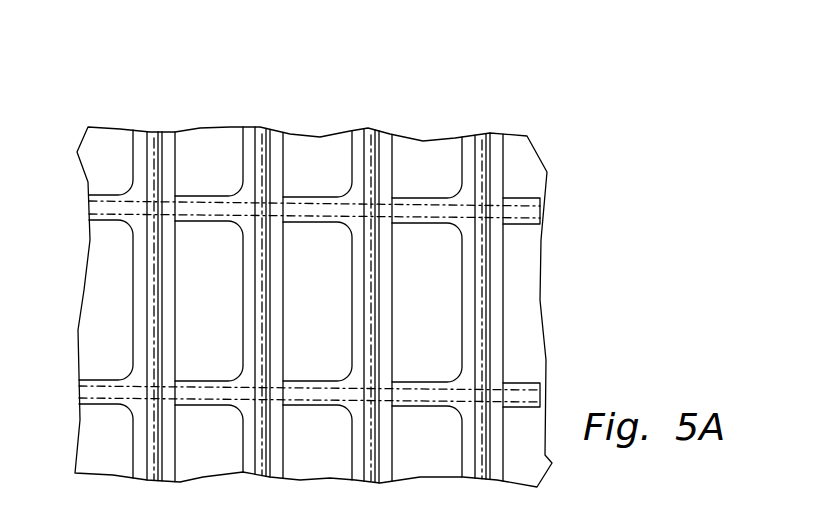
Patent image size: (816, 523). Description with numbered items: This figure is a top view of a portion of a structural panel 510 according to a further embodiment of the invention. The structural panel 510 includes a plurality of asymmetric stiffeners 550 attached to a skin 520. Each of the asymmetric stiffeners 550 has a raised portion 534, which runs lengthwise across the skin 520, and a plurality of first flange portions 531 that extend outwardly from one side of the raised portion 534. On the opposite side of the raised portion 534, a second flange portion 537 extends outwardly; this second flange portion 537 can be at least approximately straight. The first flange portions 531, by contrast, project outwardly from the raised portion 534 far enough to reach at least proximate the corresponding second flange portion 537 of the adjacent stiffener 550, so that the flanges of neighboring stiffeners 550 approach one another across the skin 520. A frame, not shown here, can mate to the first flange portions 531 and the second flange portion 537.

The structural panel 510 is at (150, 83).
The skin 520 is at (530, 167).
The first flange portions 531 is at (320, 203).
The second flange portion 537 is at (393, 173).
The asymmetric stiffeners 550 is at (172, 132).
The raised portion 534 is at (154, 480).